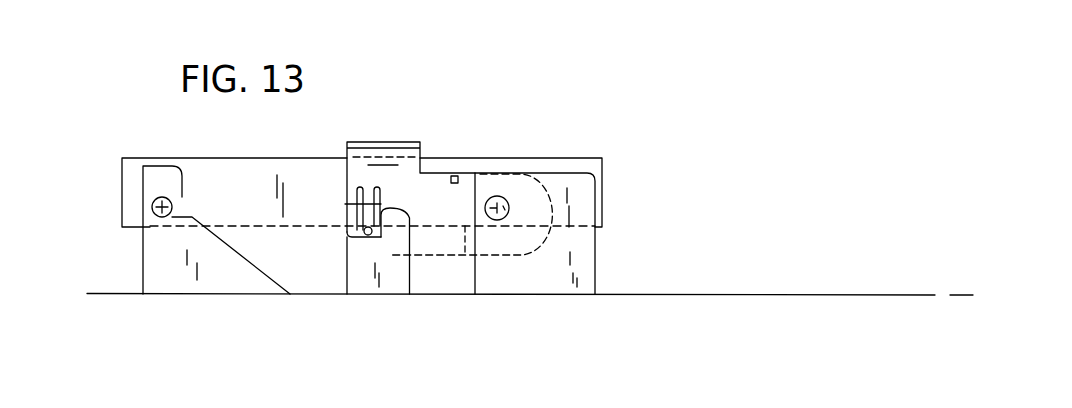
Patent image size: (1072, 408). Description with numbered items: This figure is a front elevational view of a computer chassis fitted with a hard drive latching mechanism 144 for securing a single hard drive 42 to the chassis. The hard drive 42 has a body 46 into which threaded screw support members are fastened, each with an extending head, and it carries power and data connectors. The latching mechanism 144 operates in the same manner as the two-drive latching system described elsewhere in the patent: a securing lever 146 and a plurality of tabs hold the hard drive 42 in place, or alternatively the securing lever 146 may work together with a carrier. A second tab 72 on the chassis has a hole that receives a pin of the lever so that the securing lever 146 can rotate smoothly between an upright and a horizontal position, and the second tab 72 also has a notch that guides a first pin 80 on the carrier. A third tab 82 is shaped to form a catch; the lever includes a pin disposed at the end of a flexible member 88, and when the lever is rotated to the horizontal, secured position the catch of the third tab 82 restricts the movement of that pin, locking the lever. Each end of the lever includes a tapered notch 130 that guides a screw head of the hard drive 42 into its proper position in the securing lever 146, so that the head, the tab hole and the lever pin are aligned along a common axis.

The hard drive 42 is at (280, 157).
The body 46 is at (173, 207).
The second tab 72 is at (562, 280).
The first pin 80 is at (372, 233).
The third tab 82 is at (400, 280).
The flexible member 88 is at (345, 204).
The tapered notch 130 is at (466, 192).
The hard drive latching mechanism 144 is at (539, 118).
The securing lever 146 is at (399, 158).